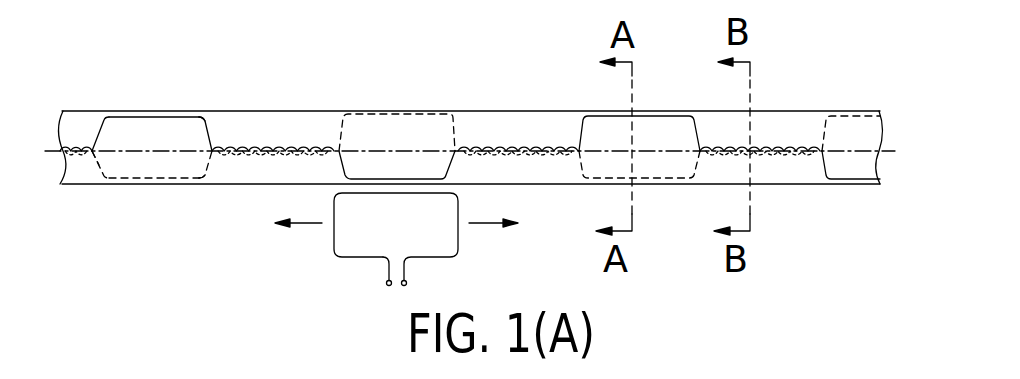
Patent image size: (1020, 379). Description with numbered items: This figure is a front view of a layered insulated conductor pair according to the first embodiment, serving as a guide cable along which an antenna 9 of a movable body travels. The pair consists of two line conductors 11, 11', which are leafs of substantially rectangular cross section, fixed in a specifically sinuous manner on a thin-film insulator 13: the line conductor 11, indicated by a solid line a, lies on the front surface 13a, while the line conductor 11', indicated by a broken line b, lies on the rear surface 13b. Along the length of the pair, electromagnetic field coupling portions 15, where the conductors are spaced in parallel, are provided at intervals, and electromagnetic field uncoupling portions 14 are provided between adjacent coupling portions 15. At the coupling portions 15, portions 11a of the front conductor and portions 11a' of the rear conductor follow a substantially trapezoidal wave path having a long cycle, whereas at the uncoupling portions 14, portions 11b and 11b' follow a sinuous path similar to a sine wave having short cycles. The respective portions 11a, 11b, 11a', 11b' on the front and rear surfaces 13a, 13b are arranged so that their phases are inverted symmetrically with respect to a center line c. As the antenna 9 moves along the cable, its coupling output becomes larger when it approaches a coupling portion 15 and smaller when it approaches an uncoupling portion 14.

The antenna 9 is at (366, 240).
The line conductor 11 is at (159, 77).
The portions of the line conductor 11a is at (76, 96).
The portions of the line conductor 11b is at (237, 77).
The line conductor 11' is at (169, 225).
The portions of the line conductor 11a' is at (113, 215).
The portions of the line conductor 11b' is at (240, 225).
The insulator 13 is at (278, 125).
The front surface 13a is at (481, 115).
The rear surface 13b is at (538, 172).
The electromagnetic field uncoupling portion 14 is at (447, 165).
The electromagnetic field coupling portion 15 is at (469, 152).
The solid line a is at (212, 122).
The broken line b is at (210, 184).
The center line c is at (103, 158).